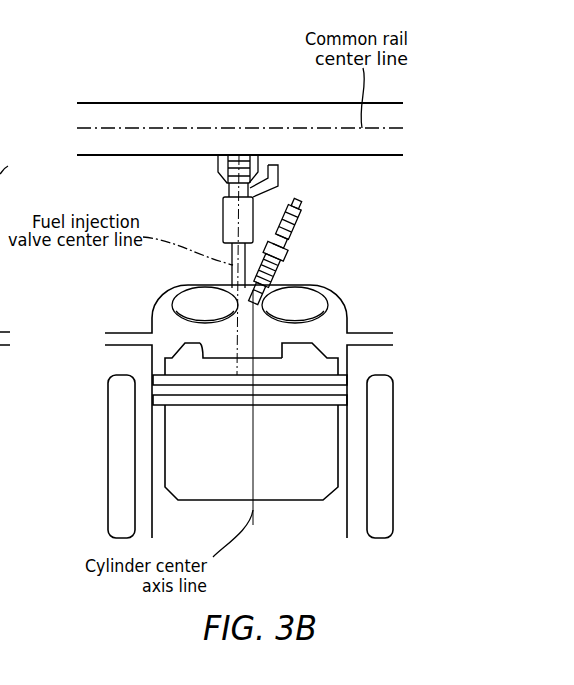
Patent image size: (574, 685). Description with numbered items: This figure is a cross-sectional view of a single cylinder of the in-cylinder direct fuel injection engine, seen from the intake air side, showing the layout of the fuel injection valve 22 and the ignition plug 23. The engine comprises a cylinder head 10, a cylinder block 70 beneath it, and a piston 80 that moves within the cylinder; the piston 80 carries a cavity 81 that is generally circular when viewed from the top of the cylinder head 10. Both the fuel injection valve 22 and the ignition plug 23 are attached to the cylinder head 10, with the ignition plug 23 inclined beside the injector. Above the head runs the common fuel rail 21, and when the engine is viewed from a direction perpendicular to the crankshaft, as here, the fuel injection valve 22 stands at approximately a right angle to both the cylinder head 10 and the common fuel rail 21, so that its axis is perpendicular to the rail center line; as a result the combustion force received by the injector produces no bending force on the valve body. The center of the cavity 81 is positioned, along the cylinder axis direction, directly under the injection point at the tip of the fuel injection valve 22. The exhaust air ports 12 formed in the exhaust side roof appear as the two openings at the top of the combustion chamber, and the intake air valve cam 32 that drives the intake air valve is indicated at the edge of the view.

The cylinder head 10 is at (112, 307).
The exhaust air port 12 is at (187, 297).
The common fuel rail 21 is at (135, 110).
The fuel injection valve 22 is at (222, 220).
The ignition plug 23 is at (296, 240).
The intake air valve cam 32 is at (16, 162).
The cylinder block 70 is at (108, 362).
The piston 80 is at (304, 490).
The cavity 81 is at (262, 348).